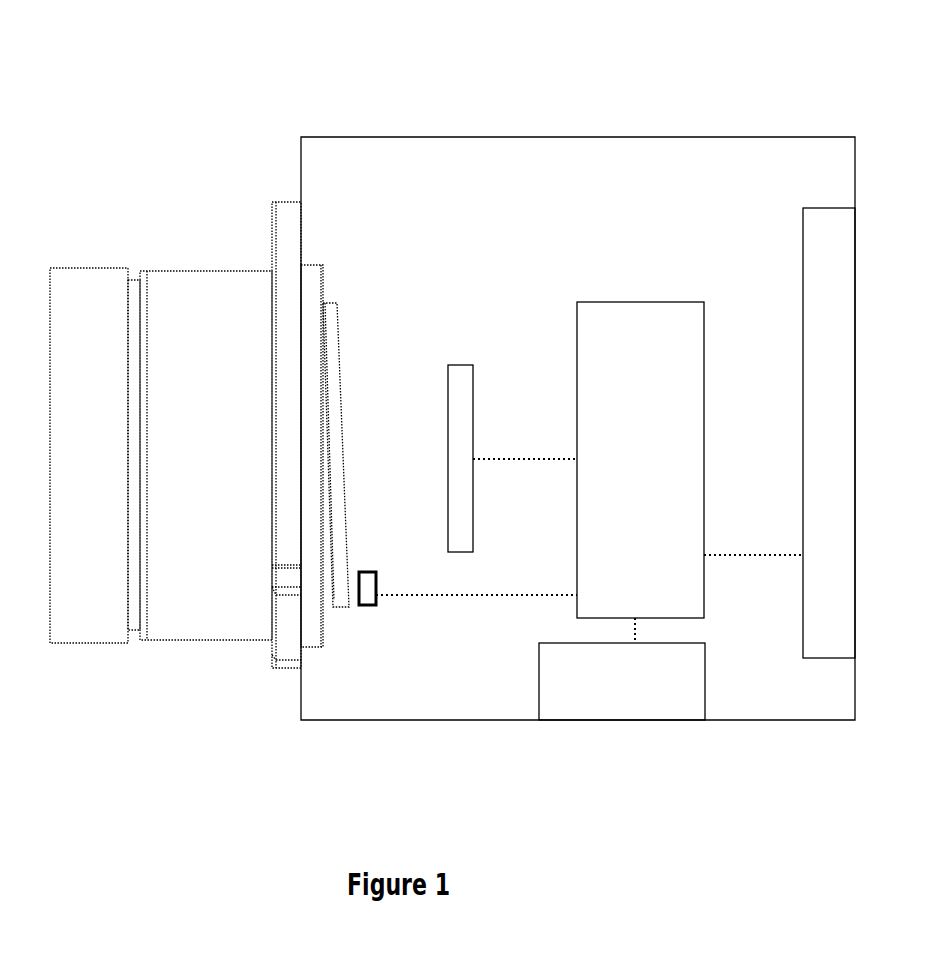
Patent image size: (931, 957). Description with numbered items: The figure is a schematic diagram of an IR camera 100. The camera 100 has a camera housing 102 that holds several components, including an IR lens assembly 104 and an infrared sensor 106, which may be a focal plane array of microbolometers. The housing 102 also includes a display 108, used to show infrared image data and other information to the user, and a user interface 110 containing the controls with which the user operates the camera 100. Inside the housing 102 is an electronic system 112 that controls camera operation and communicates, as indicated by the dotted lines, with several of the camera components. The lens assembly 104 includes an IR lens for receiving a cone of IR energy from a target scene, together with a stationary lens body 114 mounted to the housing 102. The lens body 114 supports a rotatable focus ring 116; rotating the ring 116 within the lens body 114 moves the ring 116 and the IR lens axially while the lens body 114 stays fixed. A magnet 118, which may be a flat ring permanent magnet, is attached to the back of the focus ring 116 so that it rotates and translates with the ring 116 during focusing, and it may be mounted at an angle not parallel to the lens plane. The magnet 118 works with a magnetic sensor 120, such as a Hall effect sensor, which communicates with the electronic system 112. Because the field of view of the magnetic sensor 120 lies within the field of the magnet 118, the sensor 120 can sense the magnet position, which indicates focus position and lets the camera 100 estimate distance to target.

The IR camera 100 is at (639, 103).
The camera housing 102 is at (578, 180).
The IR lens assembly 104 is at (137, 255).
The infrared sensor 106 is at (462, 377).
The display 108 is at (847, 290).
The user interface 110 is at (637, 700).
The electronic system 112 is at (660, 356).
The lens body 114 is at (240, 300).
The focus ring 116 is at (85, 295).
The magnet 118 is at (337, 362).
The magnetic sensor 120 is at (376, 580).